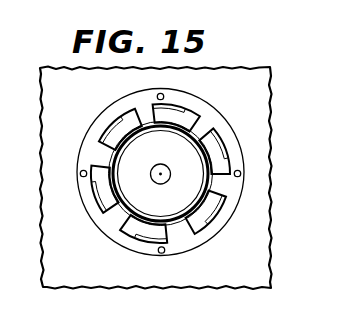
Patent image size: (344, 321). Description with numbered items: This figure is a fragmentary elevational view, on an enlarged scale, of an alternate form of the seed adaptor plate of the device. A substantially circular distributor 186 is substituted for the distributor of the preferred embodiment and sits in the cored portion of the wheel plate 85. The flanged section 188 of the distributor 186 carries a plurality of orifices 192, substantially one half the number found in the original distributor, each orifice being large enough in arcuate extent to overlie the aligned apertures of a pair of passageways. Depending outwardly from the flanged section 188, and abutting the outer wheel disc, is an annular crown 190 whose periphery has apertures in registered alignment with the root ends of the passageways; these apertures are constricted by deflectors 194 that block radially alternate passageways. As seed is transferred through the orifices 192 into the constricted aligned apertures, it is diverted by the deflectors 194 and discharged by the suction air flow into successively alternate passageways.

The wheel plate 85 is at (264, 87).
The distributor 186 is at (88, 108).
The flanged section 188 is at (97, 135).
The annular crown 190 is at (134, 137).
The orifices 192 is at (192, 118).
The deflectors 194 is at (225, 149).